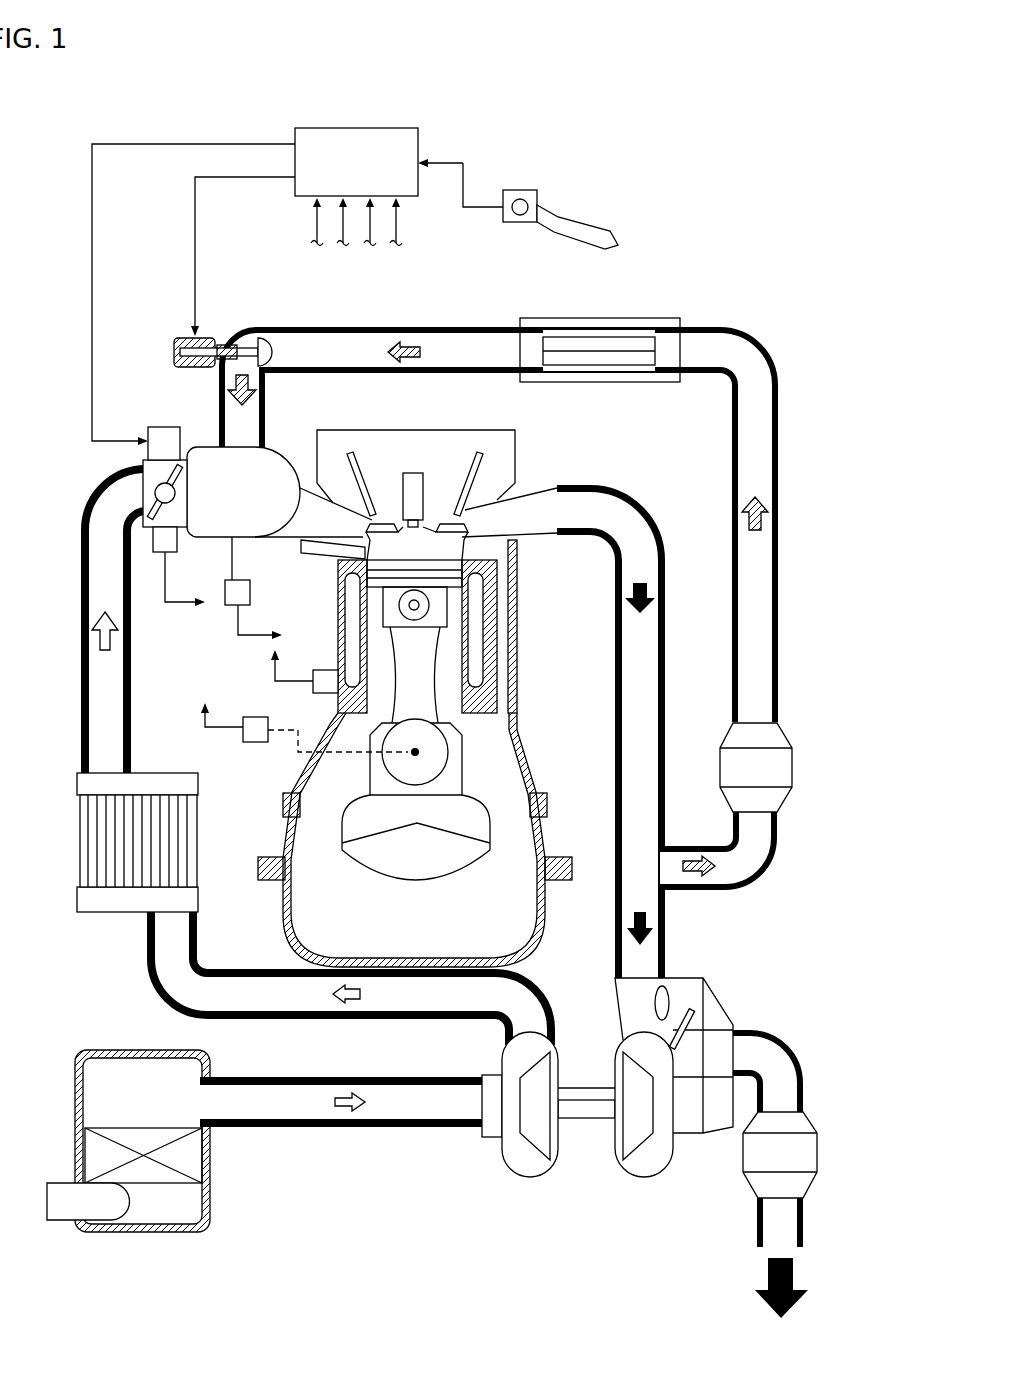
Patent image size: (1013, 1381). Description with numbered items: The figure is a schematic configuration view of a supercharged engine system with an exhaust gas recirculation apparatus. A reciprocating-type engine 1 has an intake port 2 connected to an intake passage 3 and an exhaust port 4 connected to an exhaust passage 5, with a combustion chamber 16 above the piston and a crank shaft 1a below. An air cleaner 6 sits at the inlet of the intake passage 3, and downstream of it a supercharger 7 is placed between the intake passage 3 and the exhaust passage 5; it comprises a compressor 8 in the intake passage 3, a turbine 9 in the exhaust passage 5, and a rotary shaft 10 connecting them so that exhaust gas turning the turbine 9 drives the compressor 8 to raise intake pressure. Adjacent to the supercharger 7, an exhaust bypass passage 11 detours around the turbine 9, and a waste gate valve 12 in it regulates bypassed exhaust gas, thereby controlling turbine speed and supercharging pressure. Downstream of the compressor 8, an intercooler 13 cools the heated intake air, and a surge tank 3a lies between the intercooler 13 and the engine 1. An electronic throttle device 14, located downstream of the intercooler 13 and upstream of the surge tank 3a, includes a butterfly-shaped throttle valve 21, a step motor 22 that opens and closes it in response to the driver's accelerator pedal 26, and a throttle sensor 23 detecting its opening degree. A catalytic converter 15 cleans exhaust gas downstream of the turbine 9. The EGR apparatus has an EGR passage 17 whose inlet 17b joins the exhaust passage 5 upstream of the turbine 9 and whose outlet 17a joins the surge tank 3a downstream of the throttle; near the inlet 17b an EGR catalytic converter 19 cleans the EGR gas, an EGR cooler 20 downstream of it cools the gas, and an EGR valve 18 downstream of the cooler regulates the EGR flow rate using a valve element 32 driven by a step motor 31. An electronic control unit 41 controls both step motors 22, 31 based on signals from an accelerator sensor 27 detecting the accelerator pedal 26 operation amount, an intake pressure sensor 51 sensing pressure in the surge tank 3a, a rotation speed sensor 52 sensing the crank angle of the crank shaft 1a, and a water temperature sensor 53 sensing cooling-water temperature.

The engine 1 is at (522, 436).
The crank shaft 1a is at (448, 748).
The intake port 2 is at (343, 515).
The intake passage 3 is at (80, 678).
The surge tank 3a is at (213, 537).
The exhaust port 4 is at (538, 530).
The exhaust passage 5 is at (614, 698).
The air cleaner 6 is at (168, 1232).
The supercharger 7 is at (577, 1128).
The compressor 8 is at (545, 1148).
The turbine 9 is at (633, 1148).
The rotary shaft 10 is at (588, 1097).
The exhaust bypass passage 11 is at (690, 978).
The waste gate valve 12 is at (696, 1006).
The intercooler 13 is at (198, 812).
The electronic throttle device 14 is at (132, 497).
The catalytic converter 15 is at (803, 1120).
The combustion chamber 16 is at (405, 553).
The EGR passage 17 is at (468, 327).
The outlet 17a is at (282, 452).
The inlet 17b is at (678, 852).
The EGR valve 18 is at (243, 345).
The EGR catalytic converter 19 is at (786, 768).
The EGR cooler 20 is at (590, 352).
The throttle valve 21 is at (143, 470).
The step motor 22 is at (165, 427).
The throttle sensor 23 is at (158, 552).
The accelerator pedal 26 is at (612, 230).
The accelerator sensor 27 is at (514, 190).
The step motor 31 is at (176, 352).
The valve element 32 is at (266, 345).
The electronic control unit 41 is at (365, 128).
The intake pressure sensor 51 is at (232, 605).
The rotation speed sensor 52 is at (250, 718).
The water temperature sensor 53 is at (320, 670).